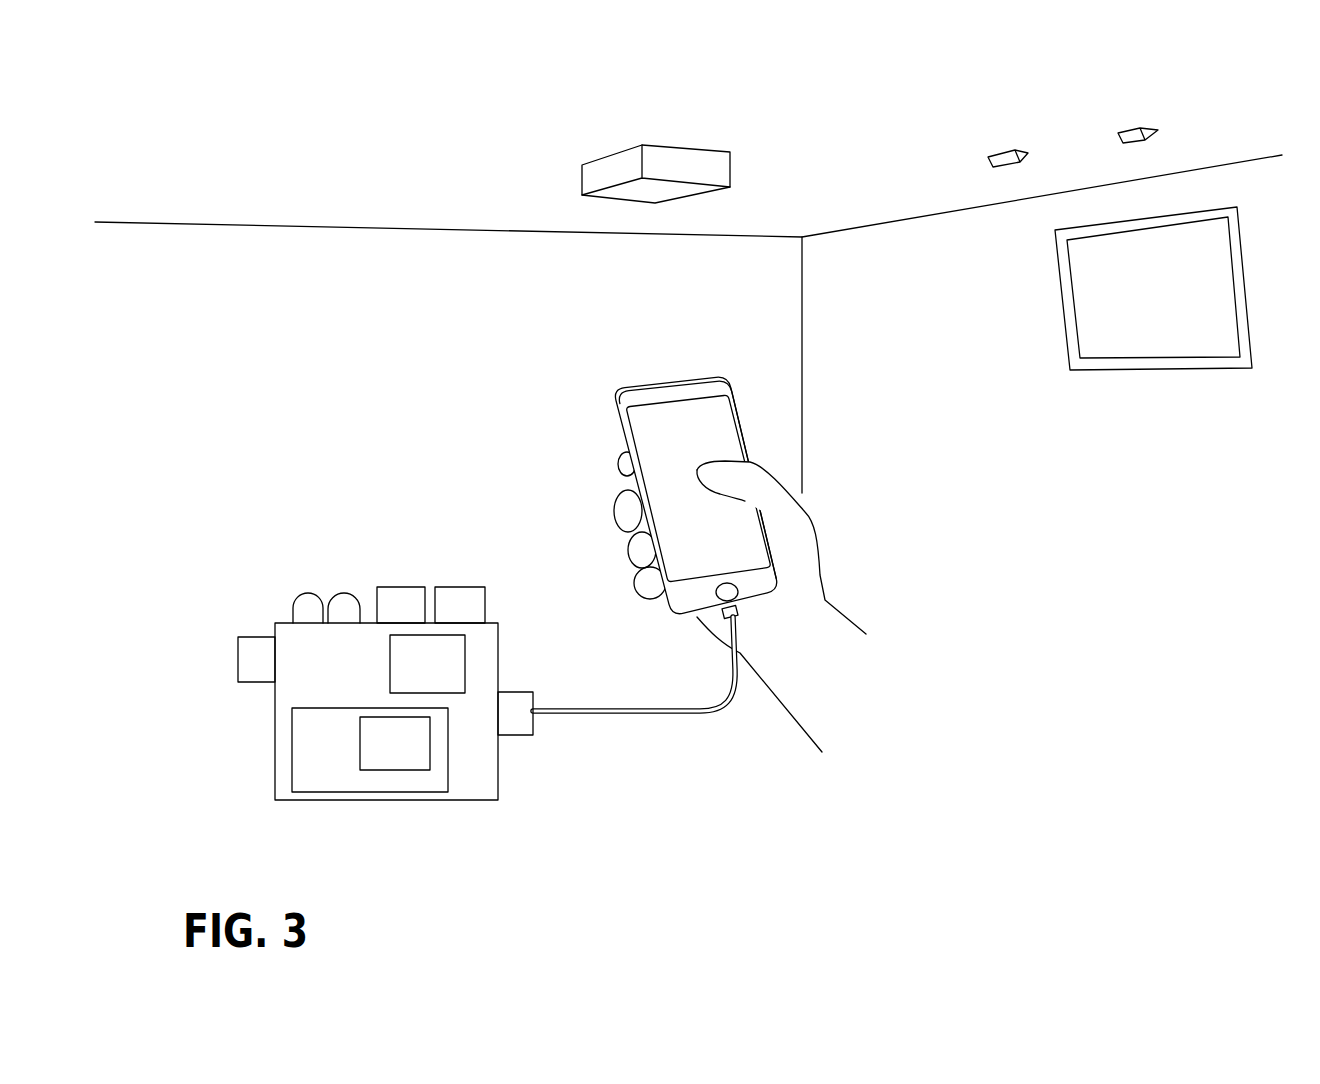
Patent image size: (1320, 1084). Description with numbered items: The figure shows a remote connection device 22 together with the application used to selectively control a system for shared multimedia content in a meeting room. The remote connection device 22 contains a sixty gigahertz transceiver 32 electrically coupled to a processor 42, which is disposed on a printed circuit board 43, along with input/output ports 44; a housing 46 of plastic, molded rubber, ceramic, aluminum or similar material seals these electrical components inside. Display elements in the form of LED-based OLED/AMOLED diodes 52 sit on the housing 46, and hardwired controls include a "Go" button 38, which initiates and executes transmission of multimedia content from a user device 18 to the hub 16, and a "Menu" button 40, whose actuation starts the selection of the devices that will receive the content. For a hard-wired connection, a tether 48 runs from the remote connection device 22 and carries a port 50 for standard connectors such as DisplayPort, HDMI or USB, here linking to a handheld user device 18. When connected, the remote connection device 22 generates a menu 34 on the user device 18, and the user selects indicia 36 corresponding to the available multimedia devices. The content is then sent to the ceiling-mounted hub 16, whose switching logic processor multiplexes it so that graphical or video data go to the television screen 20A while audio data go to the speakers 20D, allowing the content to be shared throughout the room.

The hub 16 is at (592, 178).
The user device 18 is at (710, 538).
The television screen 20A is at (1158, 348).
The speakers 20D is at (1117, 132).
The remote connection device 22 is at (361, 638).
The 60 GHz transceiver 32 is at (427, 664).
The menu 34 is at (732, 428).
The indicia 36 is at (668, 522).
The "Go" button 38 is at (398, 587).
The "Menu" button 40 is at (460, 587).
The processor 42 is at (395, 743).
The printed circuit board 43 is at (370, 750).
The input/output ports 44 is at (238, 653).
The housing 46 is at (275, 727).
The tether 48 is at (637, 715).
The port 50 is at (508, 737).
The LED-based OLED/AMOLED diodes 52 is at (338, 592).